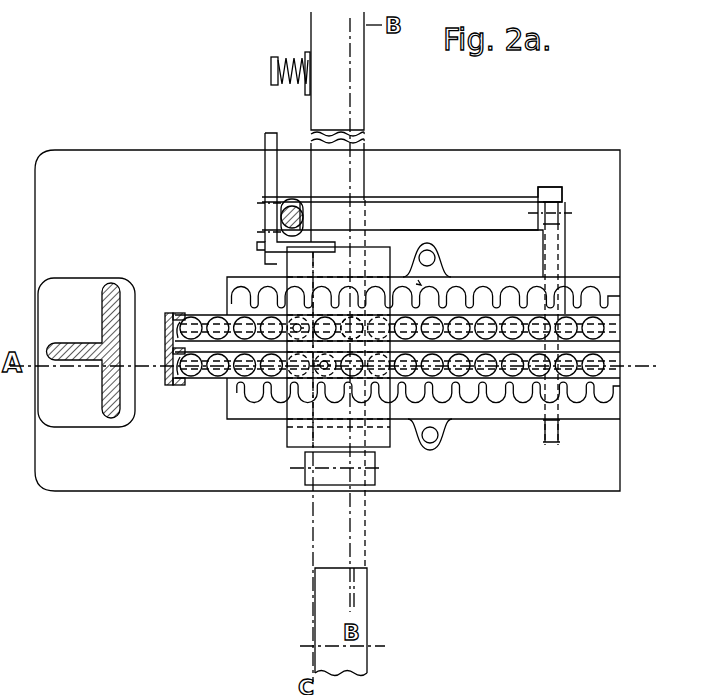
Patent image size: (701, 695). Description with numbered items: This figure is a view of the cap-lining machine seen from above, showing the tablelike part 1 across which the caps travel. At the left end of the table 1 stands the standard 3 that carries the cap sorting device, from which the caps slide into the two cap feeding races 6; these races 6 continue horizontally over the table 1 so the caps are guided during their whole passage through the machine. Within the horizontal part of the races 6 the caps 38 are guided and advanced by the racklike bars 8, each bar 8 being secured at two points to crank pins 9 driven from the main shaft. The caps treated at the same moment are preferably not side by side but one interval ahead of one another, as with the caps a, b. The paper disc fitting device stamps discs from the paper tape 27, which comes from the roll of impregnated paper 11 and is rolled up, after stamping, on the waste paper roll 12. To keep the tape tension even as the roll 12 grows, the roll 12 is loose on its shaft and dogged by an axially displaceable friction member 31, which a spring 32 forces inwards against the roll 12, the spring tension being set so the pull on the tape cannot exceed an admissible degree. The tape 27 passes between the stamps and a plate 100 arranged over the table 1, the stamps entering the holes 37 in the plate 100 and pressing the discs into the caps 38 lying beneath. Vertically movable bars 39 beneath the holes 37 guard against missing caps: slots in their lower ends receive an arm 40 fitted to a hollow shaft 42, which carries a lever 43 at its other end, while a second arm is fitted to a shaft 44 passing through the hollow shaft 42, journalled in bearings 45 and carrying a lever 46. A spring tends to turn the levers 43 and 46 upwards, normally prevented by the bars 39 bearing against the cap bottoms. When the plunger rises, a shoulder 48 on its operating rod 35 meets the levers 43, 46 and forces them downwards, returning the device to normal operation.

The tablelike part 1 is at (470, 152).
The standard 3 is at (104, 390).
The cap feeding races 6 is at (176, 314).
The racklike bars 8 is at (602, 284).
The crank pins 9 is at (437, 441).
The roll of impregnated paper 11 is at (362, 593).
The waste paper roll 12 is at (348, 62).
The paper tape 27 is at (369, 516).
The friction member 31 is at (305, 88).
The spring 32 is at (290, 60).
The rod 35 is at (301, 211).
The holes 37 is at (357, 324).
The caps 38 is at (237, 369).
The vertically movable bars 39 is at (297, 322).
The arm of double-armed lever 40 is at (331, 321).
The hollow shaft 42 is at (541, 252).
The lever 43 is at (503, 230).
The shaft 44 is at (560, 218).
The bearings 45 is at (560, 212).
The lever 46 is at (437, 199).
The shoulder 48 is at (292, 203).
The plate 100 is at (291, 436).
The cap a is at (321, 330).
The cap b is at (361, 373).